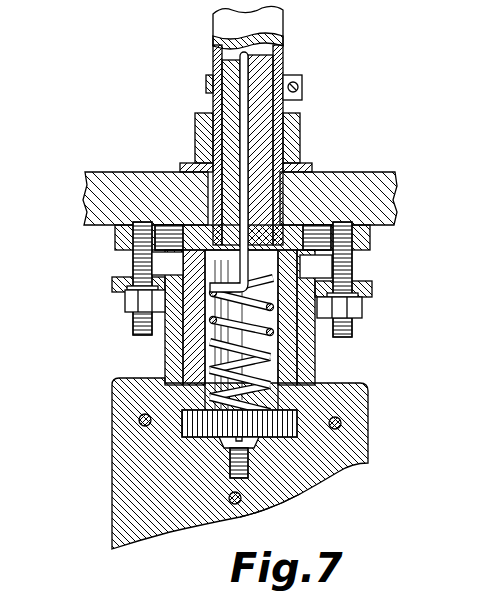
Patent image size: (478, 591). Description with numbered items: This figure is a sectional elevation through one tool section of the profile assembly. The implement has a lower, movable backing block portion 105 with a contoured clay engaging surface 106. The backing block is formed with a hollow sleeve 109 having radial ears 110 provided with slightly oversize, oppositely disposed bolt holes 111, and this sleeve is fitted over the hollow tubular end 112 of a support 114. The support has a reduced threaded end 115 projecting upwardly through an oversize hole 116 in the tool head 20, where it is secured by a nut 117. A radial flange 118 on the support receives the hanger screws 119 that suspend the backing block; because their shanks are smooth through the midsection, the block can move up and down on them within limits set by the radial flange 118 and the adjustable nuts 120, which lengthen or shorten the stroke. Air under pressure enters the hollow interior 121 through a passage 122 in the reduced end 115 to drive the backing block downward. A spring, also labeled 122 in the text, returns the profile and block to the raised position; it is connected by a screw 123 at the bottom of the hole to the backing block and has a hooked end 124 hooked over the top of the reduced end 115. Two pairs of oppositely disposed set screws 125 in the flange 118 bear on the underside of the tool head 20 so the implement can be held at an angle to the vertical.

The tool head 20 is at (395, 173).
The backing block portion 105 is at (368, 437).
The contoured clay engaging surface 106 is at (310, 490).
The hollow sleeve 109 is at (316, 356).
The radial ears 110 is at (372, 290).
The bolt holes 111 is at (138, 290).
The hollow tubular end 112 is at (166, 348).
The support 114 is at (285, 106).
The reduced threaded end 115 is at (215, 108).
The oversize hole 116 is at (312, 166).
The nut 117 is at (300, 130).
The radial flange 118 is at (115, 238).
The hanger screws 119 is at (140, 268).
The nuts 120 is at (127, 300).
The hollow interior 121 is at (210, 418).
The passage 122 is at (213, 76).
The screw 123 is at (222, 440).
The hooked end 124 is at (272, 42).
The set screws 125 is at (242, 265).